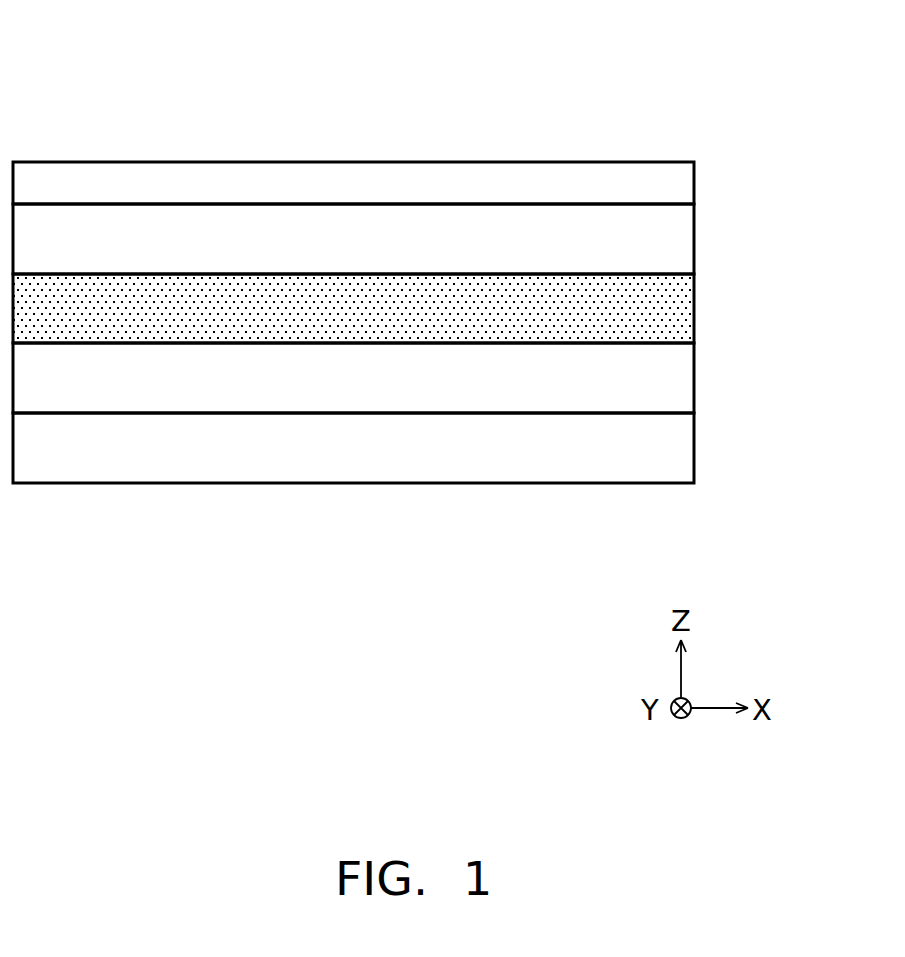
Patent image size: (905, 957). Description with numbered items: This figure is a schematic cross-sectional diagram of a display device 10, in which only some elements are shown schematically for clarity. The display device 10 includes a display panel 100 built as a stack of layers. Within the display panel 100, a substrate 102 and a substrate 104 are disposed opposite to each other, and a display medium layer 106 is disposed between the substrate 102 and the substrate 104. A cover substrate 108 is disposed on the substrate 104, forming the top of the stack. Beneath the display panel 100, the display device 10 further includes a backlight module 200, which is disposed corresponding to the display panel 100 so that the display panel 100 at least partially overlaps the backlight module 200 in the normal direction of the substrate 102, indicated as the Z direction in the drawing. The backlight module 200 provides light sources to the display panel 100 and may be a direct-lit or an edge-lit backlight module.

The display device 10 is at (425, 243).
The display panel 100 is at (425, 286).
The substrate 102 is at (389, 378).
The substrate 104 is at (682, 241).
The display medium layer 106 is at (682, 311).
The cover substrate 108 is at (682, 184).
The backlight module 200 is at (682, 449).